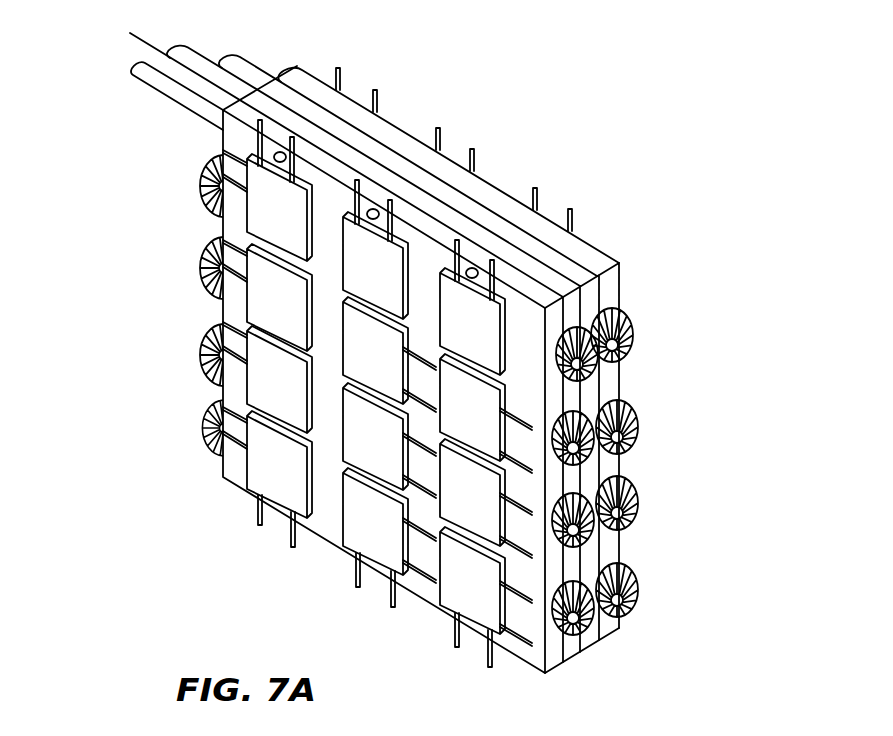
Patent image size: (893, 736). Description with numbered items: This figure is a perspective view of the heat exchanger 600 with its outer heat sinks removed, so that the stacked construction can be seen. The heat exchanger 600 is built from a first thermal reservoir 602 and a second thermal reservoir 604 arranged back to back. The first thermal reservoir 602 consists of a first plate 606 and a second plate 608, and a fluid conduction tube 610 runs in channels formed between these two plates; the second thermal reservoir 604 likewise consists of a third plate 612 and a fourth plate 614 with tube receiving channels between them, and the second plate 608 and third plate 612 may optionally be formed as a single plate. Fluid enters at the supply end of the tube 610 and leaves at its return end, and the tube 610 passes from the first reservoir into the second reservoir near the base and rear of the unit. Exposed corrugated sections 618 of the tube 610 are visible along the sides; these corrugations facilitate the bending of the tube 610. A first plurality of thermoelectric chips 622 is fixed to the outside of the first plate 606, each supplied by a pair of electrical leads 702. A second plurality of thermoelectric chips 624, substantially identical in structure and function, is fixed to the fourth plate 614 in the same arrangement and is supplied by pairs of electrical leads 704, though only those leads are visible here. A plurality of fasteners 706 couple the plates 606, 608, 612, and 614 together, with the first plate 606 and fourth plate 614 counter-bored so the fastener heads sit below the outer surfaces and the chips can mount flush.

The heat exchanger 600 is at (410, 361).
The first thermal reservoir 602 is at (132, 64).
The second thermal reservoir 604 is at (322, 153).
The first plate 606 is at (233, 127).
The second plate 608 is at (565, 670).
The fluid conduction tube 610 is at (203, 410).
The third plate 612 is at (605, 259).
The fourth plate 614 is at (304, 82).
The corrugated sections 618 is at (200, 262).
The thermoelectric chips 622 is at (261, 217).
The thermoelectric chips 624 is at (377, 100).
The electrical leads 702 is at (292, 525).
The electrical leads 704 is at (372, 92).
The fasteners 706 is at (256, 167).